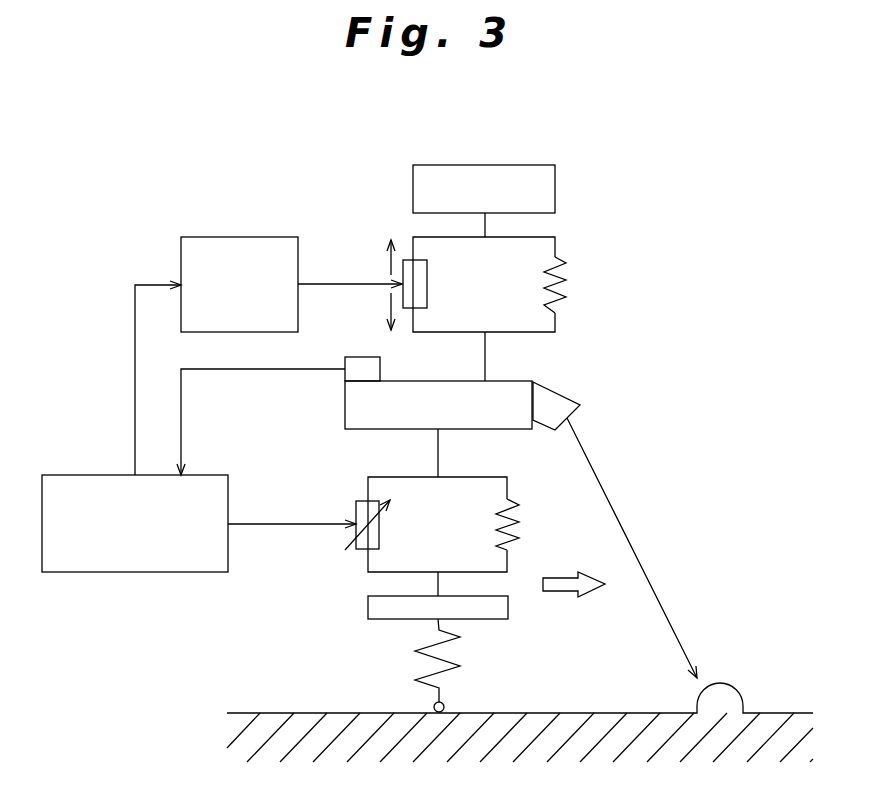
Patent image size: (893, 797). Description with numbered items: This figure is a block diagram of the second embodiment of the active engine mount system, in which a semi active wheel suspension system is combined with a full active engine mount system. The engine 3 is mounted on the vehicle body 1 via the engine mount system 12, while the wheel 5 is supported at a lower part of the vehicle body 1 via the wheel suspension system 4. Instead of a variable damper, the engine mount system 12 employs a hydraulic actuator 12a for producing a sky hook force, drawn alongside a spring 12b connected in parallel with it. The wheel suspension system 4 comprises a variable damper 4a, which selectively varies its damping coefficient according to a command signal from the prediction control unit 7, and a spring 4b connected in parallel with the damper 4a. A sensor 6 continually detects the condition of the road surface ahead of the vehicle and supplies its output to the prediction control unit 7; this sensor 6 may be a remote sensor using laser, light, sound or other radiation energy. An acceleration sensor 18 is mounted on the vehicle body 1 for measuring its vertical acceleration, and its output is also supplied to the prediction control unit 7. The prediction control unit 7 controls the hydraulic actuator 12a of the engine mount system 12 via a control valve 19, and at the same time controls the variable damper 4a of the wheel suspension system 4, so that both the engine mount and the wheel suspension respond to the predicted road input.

The vehicle body 1 is at (345, 411).
The engine 3 is at (497, 165).
The wheel suspension system 4 is at (363, 578).
The variable damper 4a is at (379, 527).
The spring 4b is at (520, 528).
The wheel 5 is at (350, 630).
The sensor 6 is at (580, 406).
The prediction control unit 7 is at (140, 572).
The engine mount system 12 is at (565, 248).
The hydraulic actuator 12a is at (427, 283).
The spring 12b is at (567, 285).
The acceleration sensor 18 is at (353, 357).
The control valve 19 is at (248, 237).